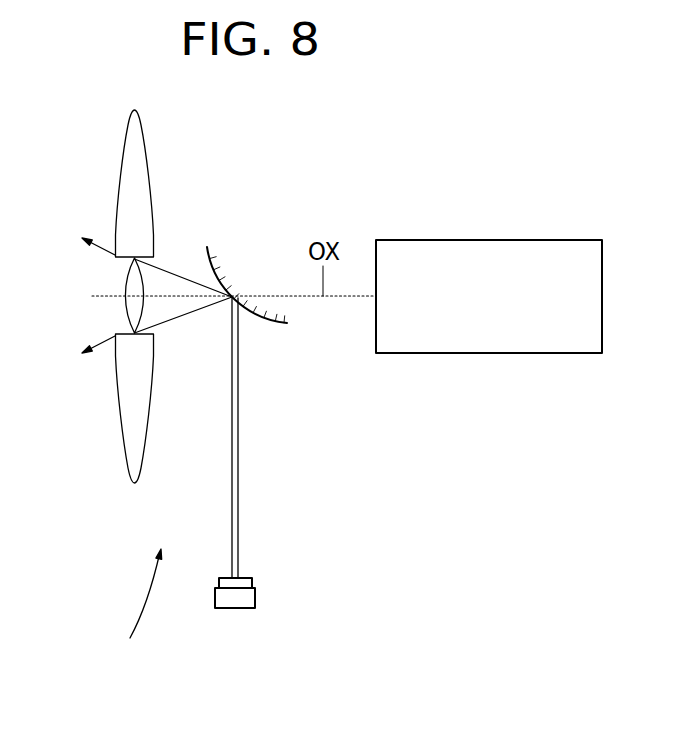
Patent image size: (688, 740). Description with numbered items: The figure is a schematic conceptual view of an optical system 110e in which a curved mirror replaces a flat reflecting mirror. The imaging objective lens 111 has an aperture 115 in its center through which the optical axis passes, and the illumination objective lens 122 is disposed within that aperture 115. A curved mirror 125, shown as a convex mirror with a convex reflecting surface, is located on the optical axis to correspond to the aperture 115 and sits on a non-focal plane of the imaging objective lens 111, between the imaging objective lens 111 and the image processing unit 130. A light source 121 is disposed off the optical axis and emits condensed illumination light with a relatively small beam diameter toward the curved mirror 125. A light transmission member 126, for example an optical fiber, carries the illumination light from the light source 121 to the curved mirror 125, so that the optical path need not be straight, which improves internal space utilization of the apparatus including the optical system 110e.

The imaging objective lens 111 is at (118, 175).
The aperture 115 is at (112, 274).
The illumination objective lens 122 is at (126, 311).
The curved mirror 125 is at (270, 322).
The light transmission member 126 is at (239, 527).
The light source 121 is at (256, 598).
The image processing unit 130 is at (461, 239).
The optical system 110e is at (132, 609).